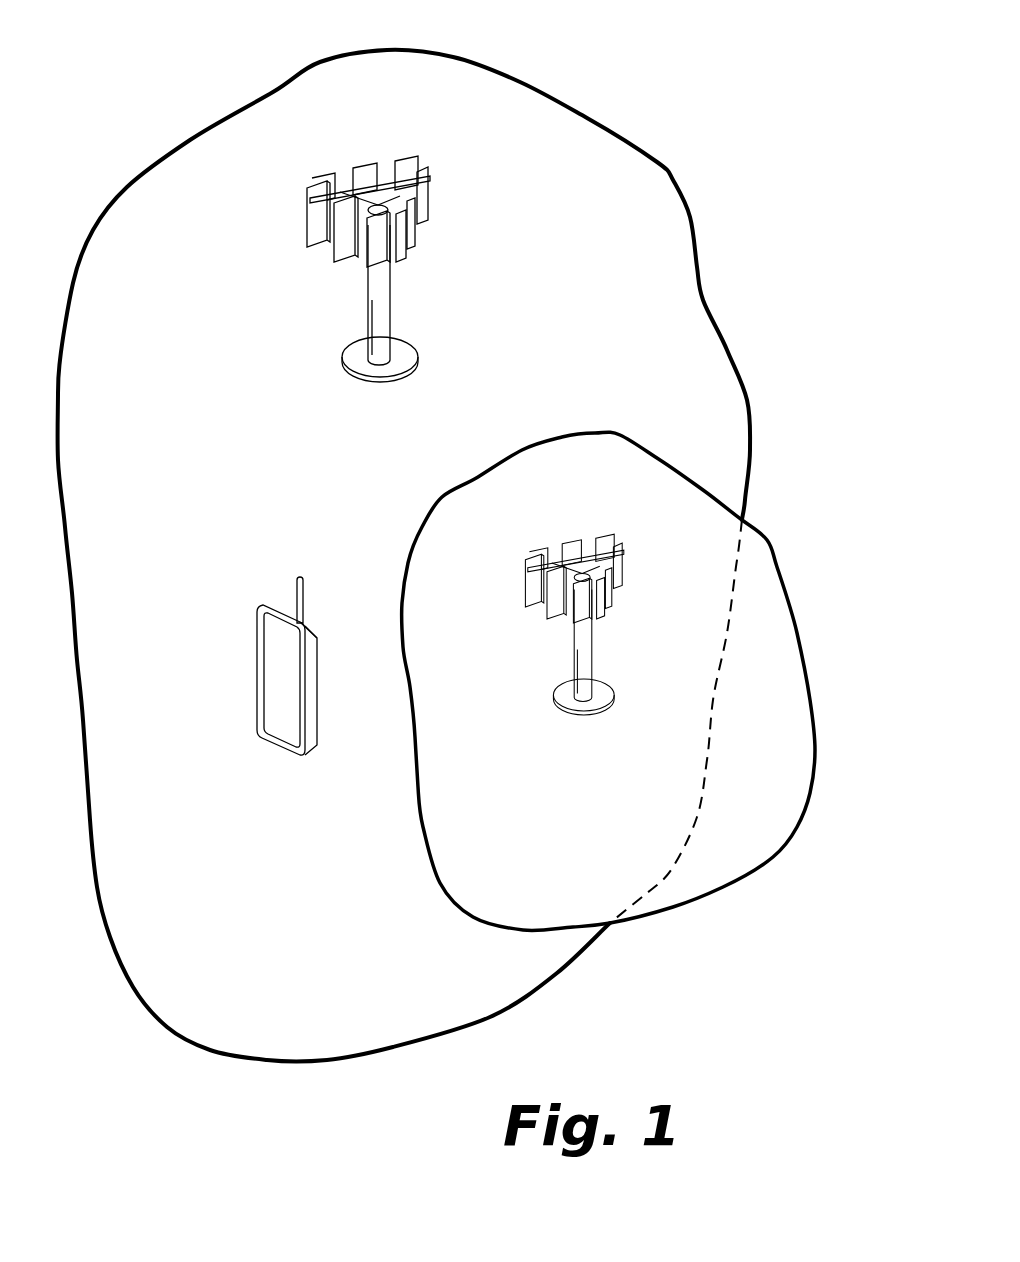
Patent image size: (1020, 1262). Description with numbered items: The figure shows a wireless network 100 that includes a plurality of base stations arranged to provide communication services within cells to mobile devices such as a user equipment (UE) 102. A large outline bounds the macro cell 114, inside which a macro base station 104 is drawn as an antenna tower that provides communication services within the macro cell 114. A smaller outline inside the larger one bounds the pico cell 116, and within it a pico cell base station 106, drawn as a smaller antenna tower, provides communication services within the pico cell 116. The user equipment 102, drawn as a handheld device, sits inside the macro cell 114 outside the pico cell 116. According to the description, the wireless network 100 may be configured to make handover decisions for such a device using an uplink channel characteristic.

The wireless network 100 is at (645, 56).
The user equipment (UE) 102 is at (270, 652).
The macro base station 104 is at (423, 180).
The pico cell base station 106 is at (620, 548).
The macro cell 114 is at (640, 148).
The pico cell 116 is at (582, 428).